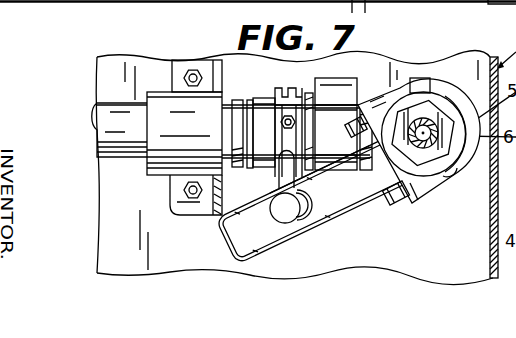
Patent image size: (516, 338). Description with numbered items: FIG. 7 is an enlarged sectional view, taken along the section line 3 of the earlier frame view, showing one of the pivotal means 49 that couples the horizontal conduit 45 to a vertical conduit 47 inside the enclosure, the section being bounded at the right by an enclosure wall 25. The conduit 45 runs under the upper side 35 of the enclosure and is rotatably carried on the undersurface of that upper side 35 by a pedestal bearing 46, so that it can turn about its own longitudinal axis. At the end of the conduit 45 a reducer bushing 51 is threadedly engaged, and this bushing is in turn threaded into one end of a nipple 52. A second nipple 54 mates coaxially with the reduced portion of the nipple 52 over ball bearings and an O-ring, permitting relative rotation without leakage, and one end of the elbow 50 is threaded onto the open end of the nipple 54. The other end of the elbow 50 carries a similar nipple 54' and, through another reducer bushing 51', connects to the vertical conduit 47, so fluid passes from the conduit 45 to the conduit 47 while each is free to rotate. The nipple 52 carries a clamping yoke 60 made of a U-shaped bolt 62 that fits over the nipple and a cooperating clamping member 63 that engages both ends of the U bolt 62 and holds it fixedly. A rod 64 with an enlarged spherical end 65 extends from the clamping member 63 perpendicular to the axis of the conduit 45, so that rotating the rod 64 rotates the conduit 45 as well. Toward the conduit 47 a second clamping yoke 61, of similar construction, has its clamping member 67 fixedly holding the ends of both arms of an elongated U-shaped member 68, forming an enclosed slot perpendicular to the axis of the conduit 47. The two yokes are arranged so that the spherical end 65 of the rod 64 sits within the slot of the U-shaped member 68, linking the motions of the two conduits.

The section line 3 is at (50, 23).
The housing wall 25 is at (453, 2).
The upper side 35 is at (106, 234).
The conduit 45 is at (108, 160).
The pedestal bearing 46 is at (155, 177).
The conduit 47 is at (426, 126).
The pivotal means 49 is at (364, 228).
The elbow 50 is at (369, 176).
The reducer bushing 51 is at (222, 99).
The reducer bushing 51' is at (458, 197).
The nipple 52 is at (222, 208).
The second nipple 54 is at (319, 198).
The nipple 54' is at (449, 61).
The clamping yoke 60 is at (276, 89).
The second clamping yoke 61 is at (427, 209).
The U-shaped bolt 62 is at (288, 93).
The clamping member 63 is at (297, 140).
The rod 64 is at (307, 230).
The enlarged spherical end 65 is at (286, 226).
The clamping member 67 is at (417, 192).
The elongated U-shaped member 68 is at (225, 262).